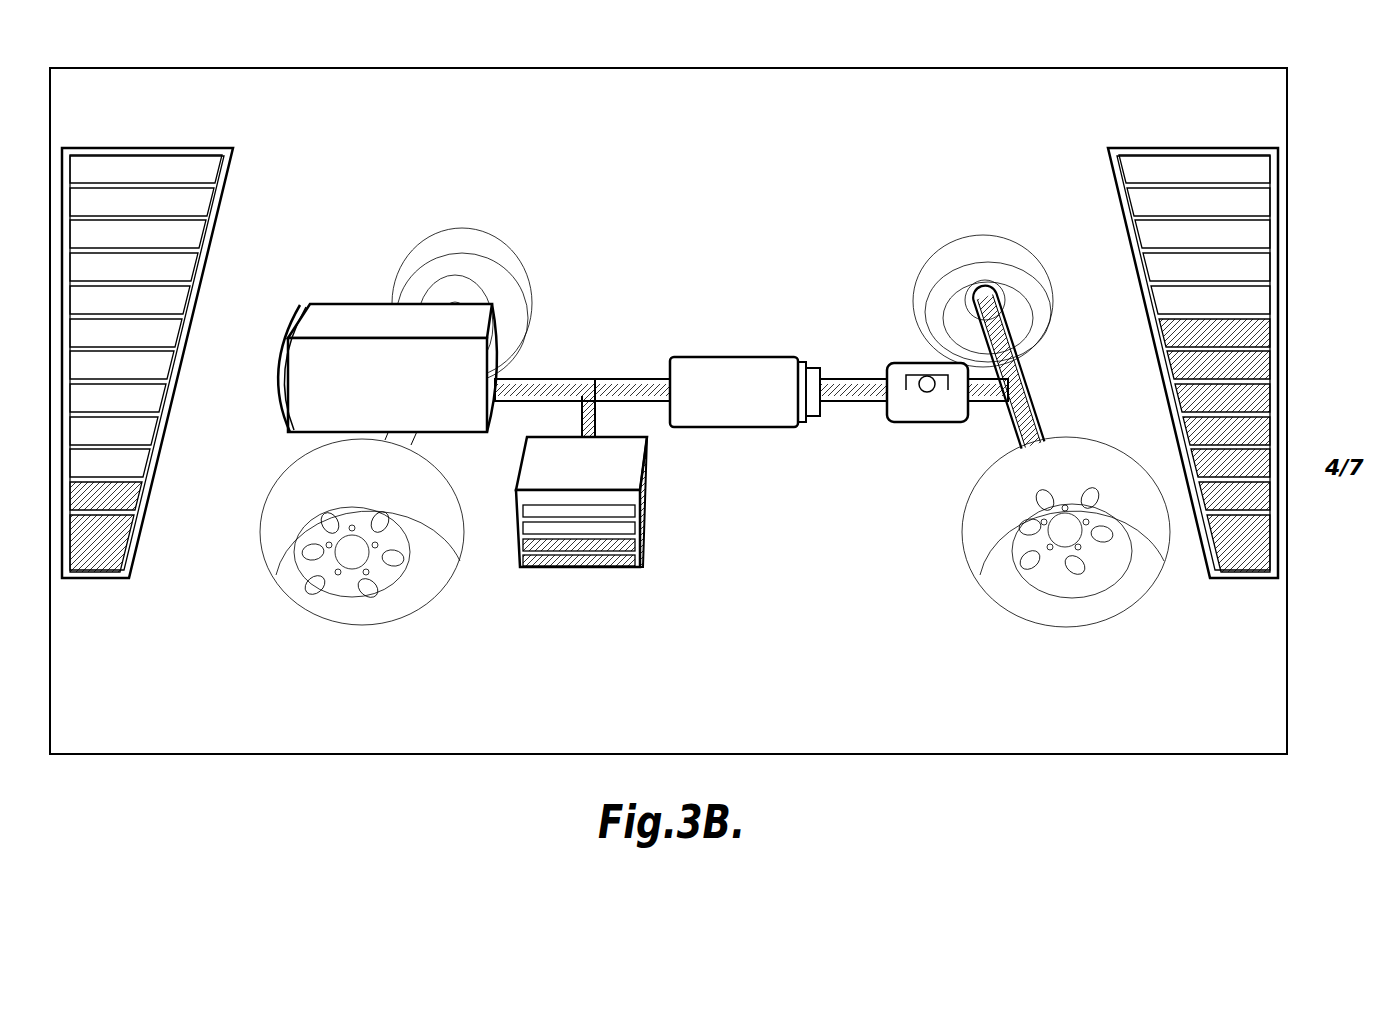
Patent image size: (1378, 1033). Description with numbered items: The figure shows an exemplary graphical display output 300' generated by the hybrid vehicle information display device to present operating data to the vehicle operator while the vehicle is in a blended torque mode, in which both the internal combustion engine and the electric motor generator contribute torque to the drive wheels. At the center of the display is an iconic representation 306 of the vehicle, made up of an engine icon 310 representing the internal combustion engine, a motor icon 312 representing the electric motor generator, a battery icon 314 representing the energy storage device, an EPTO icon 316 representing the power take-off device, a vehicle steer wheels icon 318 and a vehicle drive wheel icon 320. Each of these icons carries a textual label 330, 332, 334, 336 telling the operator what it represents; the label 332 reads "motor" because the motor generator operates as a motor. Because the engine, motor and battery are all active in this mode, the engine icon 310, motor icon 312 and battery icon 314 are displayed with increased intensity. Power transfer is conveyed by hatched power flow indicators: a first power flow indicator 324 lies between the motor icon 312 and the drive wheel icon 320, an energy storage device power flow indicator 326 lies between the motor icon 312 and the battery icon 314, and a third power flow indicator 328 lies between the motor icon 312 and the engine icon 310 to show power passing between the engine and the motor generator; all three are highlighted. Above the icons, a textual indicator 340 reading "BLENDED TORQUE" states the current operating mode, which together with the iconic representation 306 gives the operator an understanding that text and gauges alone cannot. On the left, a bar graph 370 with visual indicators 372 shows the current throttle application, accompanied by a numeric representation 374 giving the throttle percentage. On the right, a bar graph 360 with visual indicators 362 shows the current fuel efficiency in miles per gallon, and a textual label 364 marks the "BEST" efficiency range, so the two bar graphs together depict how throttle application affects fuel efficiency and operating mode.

The graphical display output 300' is at (714, 400).
The iconic representation 306 is at (916, 224).
The engine icon 310 is at (350, 348).
The motor icon 312 is at (745, 385).
The battery icon 314 is at (596, 502).
The EPTO icon 316 is at (895, 427).
The vehicle steer wheels icon 318 is at (342, 622).
The vehicle drive wheel icon 320 is at (1060, 622).
The first power flow indicator 324 is at (850, 384).
The energy storage device power flow indicator 326 is at (638, 384).
The third power flow indicator 328 is at (537, 385).
The textual label 330 is at (378, 302).
The textual label 332 is at (735, 358).
The textual label 334 is at (555, 462).
The textual label 336 is at (940, 422).
The textual indicator 340 is at (440, 108).
The bar graph 360 is at (1240, 391).
The visual indicators 362 is at (1268, 495).
The textual label 364 is at (1120, 112).
The bar graph 370 is at (179, 391).
The visual indicators 372 is at (135, 483).
The numeric representation 374 is at (197, 106).